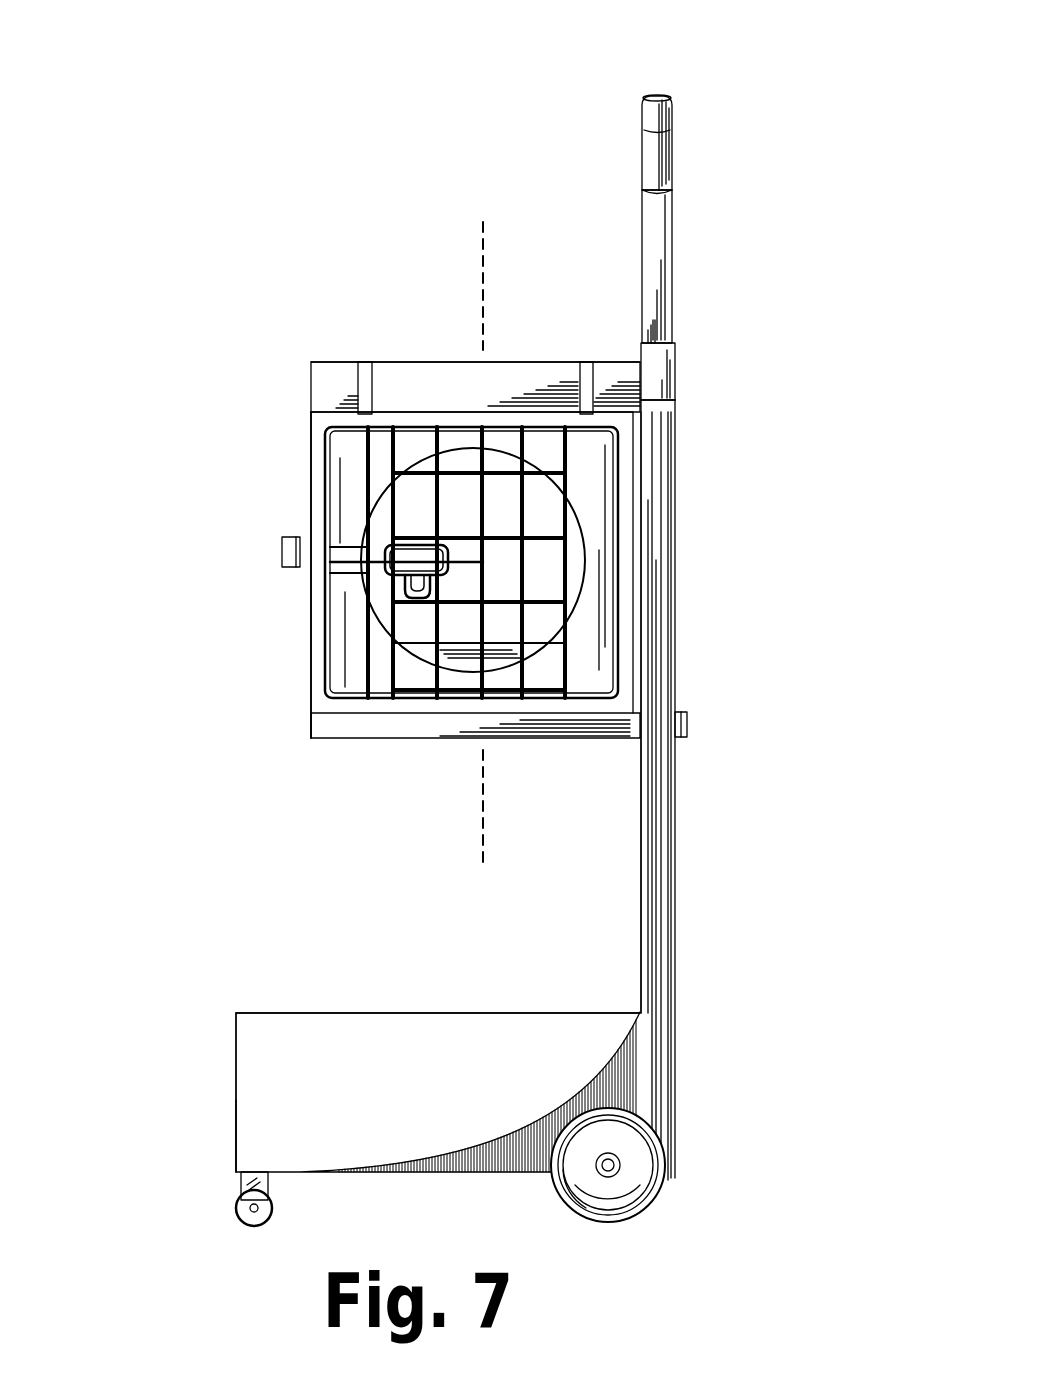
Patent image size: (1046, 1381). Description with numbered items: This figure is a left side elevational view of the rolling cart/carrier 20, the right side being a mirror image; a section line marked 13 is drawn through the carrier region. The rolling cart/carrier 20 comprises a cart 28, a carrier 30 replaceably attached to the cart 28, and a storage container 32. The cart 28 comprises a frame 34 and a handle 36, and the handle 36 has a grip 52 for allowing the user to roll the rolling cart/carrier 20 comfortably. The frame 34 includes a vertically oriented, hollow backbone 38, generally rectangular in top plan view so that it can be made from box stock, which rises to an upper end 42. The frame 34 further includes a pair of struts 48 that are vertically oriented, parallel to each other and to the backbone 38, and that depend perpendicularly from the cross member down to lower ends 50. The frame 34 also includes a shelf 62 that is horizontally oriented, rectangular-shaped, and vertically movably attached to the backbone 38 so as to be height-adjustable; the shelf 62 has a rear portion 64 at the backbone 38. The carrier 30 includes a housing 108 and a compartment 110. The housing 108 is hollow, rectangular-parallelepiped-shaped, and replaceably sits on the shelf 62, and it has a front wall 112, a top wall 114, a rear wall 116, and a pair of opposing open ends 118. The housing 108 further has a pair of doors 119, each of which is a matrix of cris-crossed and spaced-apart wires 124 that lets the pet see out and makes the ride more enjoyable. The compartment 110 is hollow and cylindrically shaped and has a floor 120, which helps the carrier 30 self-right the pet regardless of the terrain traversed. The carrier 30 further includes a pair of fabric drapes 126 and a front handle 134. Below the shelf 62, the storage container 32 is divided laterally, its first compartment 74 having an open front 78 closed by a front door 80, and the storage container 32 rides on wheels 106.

The rolling cart/carrier 20 is at (146, 194).
The cart 28 is at (684, 112).
The carrier 30 is at (337, 350).
The storage container 32 is at (296, 478).
The frame 34 is at (686, 838).
The handle 36 is at (632, 97).
The backbone 38 is at (672, 372).
The upper end 42 is at (662, 338).
The pair of struts 48 is at (675, 556).
The lower ends 50 is at (668, 1180).
The grip 52 is at (658, 88).
The shelf 62 is at (553, 740).
The rear portion 64 is at (690, 726).
The first compartment 74 is at (414, 998).
The open front 78 is at (235, 1048).
The front door 80 is at (235, 1095).
The wheels 106 is at (606, 1197).
The housing 108 is at (296, 428).
The compartment 110 is at (400, 657).
The front wall 112 is at (310, 606).
The top wall 114 is at (308, 400).
The rear wall 116 is at (637, 481).
The pair of opposing open ends 118 is at (543, 507).
The pair of doors 119 is at (527, 565).
The floor 120 is at (470, 637).
The matrix of cris-crossed and spaced-apart wires 124 is at (480, 500).
The pair of fabric drapes 126 is at (513, 362).
The front handle 134 is at (270, 558).
The section line 13- 13 is at (470, 267).